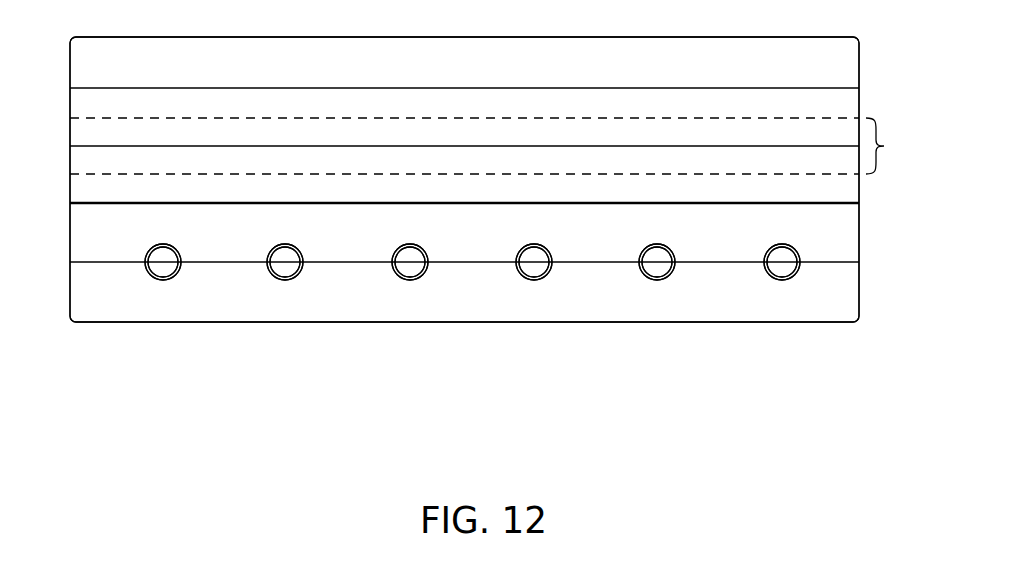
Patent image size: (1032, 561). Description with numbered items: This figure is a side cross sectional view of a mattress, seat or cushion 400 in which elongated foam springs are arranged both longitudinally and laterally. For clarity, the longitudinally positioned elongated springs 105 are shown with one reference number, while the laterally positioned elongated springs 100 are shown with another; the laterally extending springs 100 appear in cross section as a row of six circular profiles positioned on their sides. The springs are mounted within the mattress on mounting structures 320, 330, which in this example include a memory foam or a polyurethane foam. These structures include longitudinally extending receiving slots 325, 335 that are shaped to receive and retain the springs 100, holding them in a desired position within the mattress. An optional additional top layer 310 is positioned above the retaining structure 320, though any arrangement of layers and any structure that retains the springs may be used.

The elongated foam springs 100 is at (166, 264).
The elongated springs 105 is at (894, 146).
The top layer 310 is at (860, 63).
The mounting structure 320 is at (80, 105).
The receiving slot 325 is at (267, 247).
The mounting structure 330 is at (84, 174).
The receiving slot 335 is at (271, 276).
The mattress, seat or cushion 400 is at (109, 404).